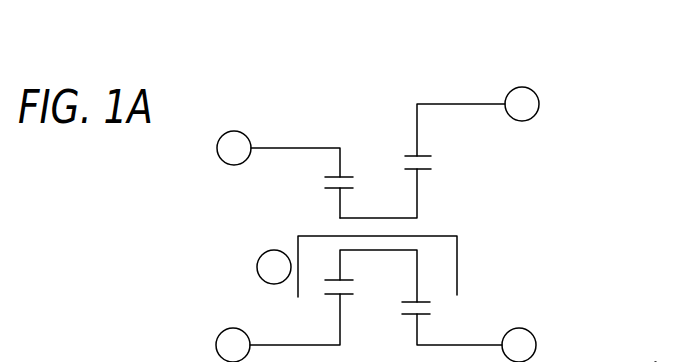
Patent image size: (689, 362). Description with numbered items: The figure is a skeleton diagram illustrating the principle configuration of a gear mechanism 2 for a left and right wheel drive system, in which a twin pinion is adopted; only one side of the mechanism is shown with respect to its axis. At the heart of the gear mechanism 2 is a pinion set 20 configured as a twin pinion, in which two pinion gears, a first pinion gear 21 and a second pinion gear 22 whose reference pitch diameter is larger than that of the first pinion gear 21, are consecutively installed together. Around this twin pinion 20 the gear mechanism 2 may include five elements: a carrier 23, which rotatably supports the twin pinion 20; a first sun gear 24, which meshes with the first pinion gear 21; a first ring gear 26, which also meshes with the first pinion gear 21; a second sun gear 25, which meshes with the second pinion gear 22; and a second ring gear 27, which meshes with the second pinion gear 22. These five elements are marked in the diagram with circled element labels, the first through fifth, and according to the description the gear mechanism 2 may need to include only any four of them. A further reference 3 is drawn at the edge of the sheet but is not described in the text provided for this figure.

The gear mechanism 2 is at (500, 60).
The variable capacitance device (second embodiment) 3 is at (655, 361).
The pinion set 20 is at (433, 212).
The first pinion gear 21 is at (338, 207).
The second pinion gear 22 is at (417, 203).
The carrier 23 is at (442, 236).
The first sun gear 24 is at (340, 325).
The second sun gear 25 is at (417, 333).
The first ring gear 26 is at (345, 166).
The second ring gear 27 is at (417, 131).